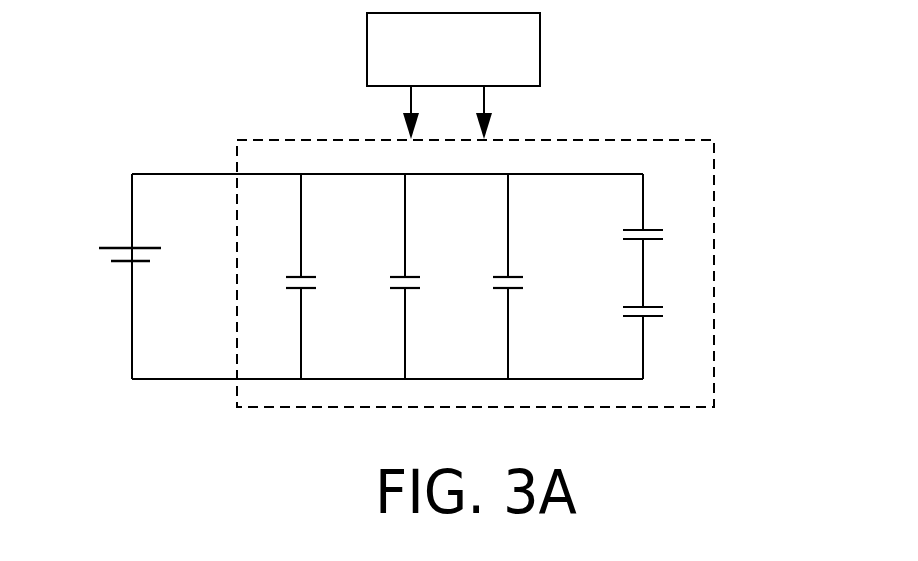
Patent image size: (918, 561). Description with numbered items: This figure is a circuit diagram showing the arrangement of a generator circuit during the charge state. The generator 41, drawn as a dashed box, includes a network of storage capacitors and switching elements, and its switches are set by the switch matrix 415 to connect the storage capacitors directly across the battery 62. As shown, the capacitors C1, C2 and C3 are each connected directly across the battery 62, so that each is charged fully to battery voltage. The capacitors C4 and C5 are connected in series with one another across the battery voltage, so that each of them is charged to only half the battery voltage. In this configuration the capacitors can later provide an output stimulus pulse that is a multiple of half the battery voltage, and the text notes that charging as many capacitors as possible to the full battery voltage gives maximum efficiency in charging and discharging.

The switch matrix 415 is at (540, 44).
The generator 41 is at (463, 273).
The battery 62 is at (120, 273).
The capacitor C1 is at (494, 276).
The capacitor C2 is at (420, 276).
The capacitor C3 is at (316, 276).
The capacitor C4 is at (617, 240).
The capacitor C5 is at (617, 335).